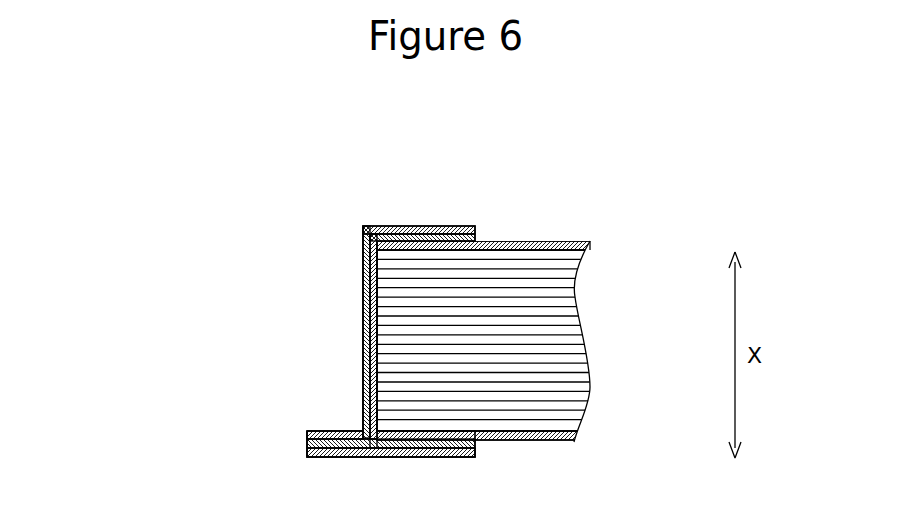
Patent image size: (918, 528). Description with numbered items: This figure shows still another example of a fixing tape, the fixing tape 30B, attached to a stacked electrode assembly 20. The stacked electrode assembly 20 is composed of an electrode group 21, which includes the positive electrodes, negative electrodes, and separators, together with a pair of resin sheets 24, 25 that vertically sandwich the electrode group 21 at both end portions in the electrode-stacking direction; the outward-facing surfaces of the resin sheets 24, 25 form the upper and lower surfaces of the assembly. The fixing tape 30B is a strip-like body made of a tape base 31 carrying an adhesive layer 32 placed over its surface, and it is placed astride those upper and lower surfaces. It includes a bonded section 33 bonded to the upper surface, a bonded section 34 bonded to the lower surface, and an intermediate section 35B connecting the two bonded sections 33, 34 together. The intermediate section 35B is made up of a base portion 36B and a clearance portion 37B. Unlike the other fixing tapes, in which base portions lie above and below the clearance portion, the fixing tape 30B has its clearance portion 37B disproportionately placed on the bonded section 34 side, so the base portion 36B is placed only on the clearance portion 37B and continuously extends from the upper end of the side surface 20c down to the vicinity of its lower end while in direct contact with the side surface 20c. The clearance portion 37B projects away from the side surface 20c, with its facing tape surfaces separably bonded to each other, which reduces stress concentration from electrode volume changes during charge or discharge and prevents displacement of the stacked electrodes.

The stacked electrode assembly 20 is at (598, 413).
The side surface 20c is at (363, 258).
The electrode group 21 is at (573, 333).
The resin sheet 24 is at (580, 241).
The resin sheet 25 is at (575, 443).
The fixing tape 30B is at (382, 212).
The tape base 31 is at (467, 234).
The adhesive layer 32 is at (483, 241).
The bonded section 33 is at (443, 226).
The bonded section 34 is at (440, 457).
The intermediate section 35B is at (212, 335).
The base portion 36B is at (363, 370).
The clearance portion 37B is at (307, 436).